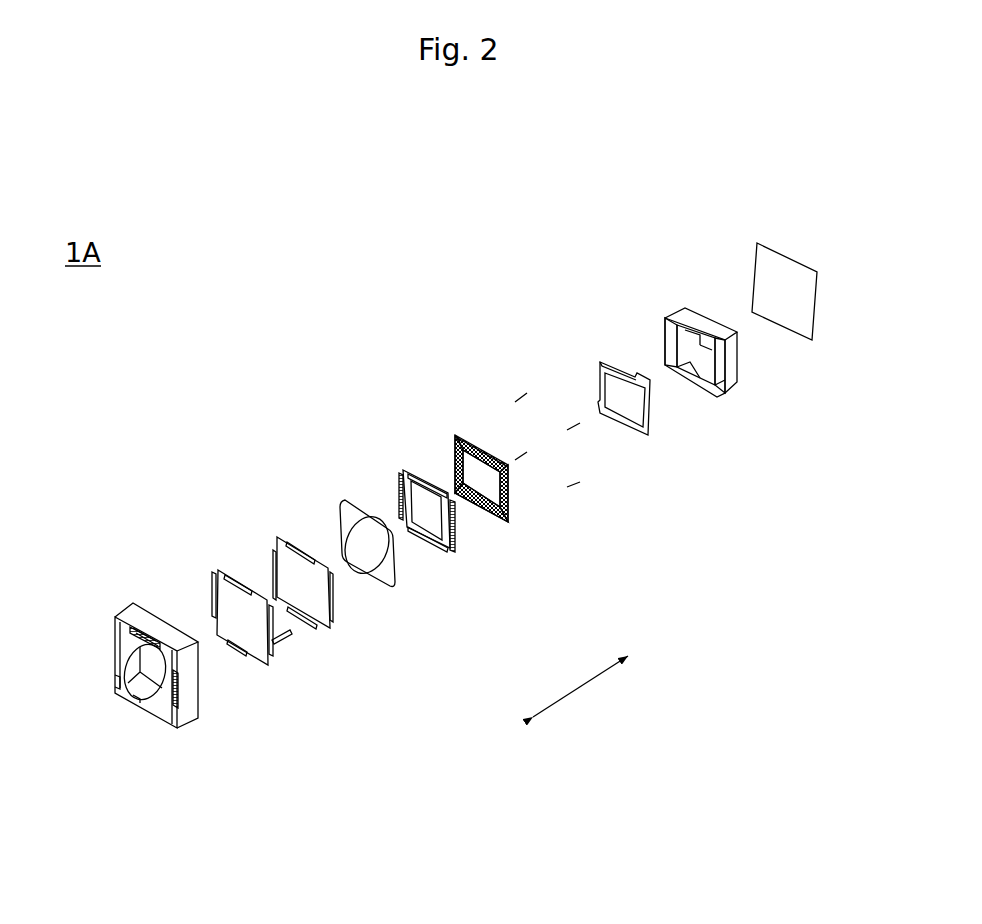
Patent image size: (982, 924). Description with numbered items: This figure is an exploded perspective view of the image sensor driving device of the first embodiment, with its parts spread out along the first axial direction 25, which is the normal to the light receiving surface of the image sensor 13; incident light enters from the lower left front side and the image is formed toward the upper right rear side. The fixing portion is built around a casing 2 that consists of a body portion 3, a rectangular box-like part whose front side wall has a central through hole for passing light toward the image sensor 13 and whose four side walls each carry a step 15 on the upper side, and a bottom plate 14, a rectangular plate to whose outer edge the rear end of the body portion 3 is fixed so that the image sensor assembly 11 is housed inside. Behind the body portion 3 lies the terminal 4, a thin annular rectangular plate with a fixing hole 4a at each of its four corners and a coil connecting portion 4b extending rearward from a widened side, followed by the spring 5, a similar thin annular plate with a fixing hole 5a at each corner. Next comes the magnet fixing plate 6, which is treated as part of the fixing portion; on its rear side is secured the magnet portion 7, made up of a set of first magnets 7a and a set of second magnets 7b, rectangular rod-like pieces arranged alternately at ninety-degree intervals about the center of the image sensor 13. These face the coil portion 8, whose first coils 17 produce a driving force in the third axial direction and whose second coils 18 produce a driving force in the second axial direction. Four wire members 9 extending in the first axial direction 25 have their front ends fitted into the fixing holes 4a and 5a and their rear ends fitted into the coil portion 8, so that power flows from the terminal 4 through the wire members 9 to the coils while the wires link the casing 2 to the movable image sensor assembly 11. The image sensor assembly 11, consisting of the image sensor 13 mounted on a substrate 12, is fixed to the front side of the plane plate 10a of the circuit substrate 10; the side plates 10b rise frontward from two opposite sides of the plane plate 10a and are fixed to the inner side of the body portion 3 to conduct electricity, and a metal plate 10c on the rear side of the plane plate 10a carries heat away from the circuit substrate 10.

The casing 2 is at (173, 728).
The body portion 3 is at (127, 685).
The step 15 is at (138, 628).
The terminal 4 is at (242, 662).
The fixing hole 4a is at (213, 630).
The coil connecting portion 4b is at (214, 574).
The spring 5 is at (307, 540).
The fixing hole 5a is at (275, 582).
The magnet fixing plate 6 is at (387, 583).
The magnet portion 7 is at (453, 554).
The first magnet 7a is at (427, 478).
The second magnet 7b is at (445, 520).
The coil portion 8 is at (510, 523).
The first coil 17 is at (487, 450).
The second coil 18 is at (457, 462).
The wire member 9 is at (517, 458).
The image sensor assembly 11 is at (649, 438).
The substrate 12 is at (603, 365).
The image sensor 13 is at (610, 393).
The circuit substrate 10 is at (722, 402).
The plane plate 10a is at (698, 350).
The side plate 10b is at (670, 348).
The metal plate 10c is at (712, 347).
The bottom plate 14 is at (800, 275).
The first axial direction 25 is at (580, 686).